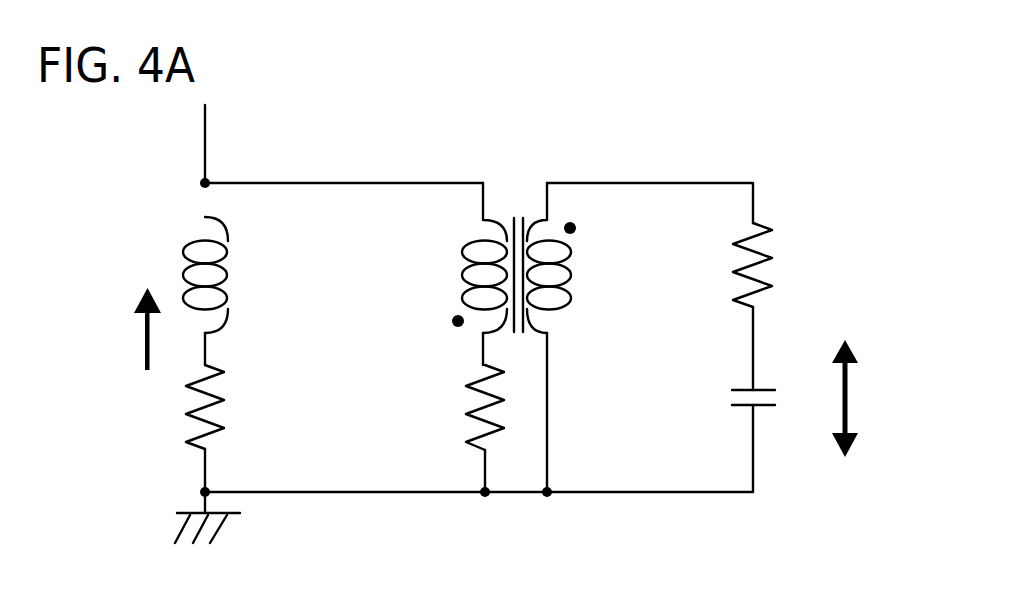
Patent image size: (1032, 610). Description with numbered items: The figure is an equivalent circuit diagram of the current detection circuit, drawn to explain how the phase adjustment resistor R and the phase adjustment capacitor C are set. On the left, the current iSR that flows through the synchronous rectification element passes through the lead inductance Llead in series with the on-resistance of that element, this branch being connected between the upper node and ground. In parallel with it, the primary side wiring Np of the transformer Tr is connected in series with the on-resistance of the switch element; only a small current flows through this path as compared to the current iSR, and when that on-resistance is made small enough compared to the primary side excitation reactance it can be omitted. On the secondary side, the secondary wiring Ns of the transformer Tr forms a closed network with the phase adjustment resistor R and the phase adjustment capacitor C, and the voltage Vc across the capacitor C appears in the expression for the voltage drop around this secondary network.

The lead inductance Llead is at (248, 275).
The current flowing through synchronous rectification element iSR is at (125, 329).
The transformer Tr is at (516, 237).
The primary side wiring of the transformer Np is at (459, 258).
The secondary side wiring of the transformer Ns is at (577, 258).
The phase adjustment resistor R is at (770, 265).
The phase adjustment capacitor C is at (770, 404).
The voltage across the capacitor Vc is at (872, 398).